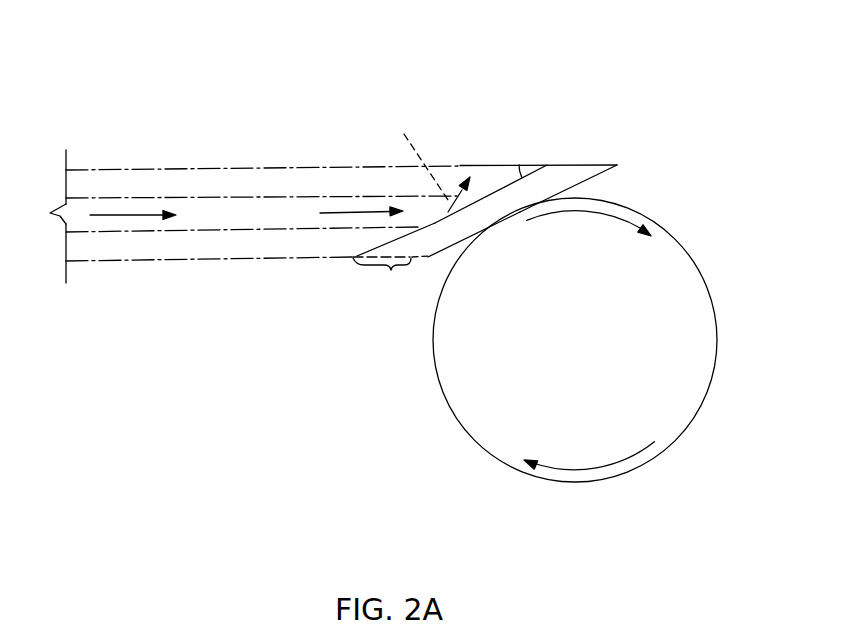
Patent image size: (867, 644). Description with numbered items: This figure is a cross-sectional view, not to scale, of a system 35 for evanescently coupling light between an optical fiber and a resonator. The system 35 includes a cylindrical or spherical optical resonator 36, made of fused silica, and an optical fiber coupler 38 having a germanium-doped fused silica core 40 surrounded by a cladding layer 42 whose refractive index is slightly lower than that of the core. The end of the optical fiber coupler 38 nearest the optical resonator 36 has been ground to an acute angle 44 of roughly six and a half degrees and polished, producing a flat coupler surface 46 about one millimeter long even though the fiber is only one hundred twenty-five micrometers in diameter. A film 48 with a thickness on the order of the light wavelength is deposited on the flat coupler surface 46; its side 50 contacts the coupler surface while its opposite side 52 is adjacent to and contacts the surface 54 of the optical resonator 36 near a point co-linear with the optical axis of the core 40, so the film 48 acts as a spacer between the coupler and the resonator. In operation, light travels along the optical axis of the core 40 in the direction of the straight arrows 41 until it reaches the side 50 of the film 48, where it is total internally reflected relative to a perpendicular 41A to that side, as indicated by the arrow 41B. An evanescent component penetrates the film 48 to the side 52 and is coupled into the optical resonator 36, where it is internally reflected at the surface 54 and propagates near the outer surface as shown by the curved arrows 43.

The system 35 is at (614, 56).
The cylindrical or spherical optical resonator 36 is at (719, 333).
The optical fiber coupler 38 is at (127, 170).
The core 40 is at (258, 210).
The straight arrows 41 is at (125, 216).
The perpendicular 41A is at (399, 138).
The arrow 41B is at (458, 195).
The cladding layer 42 is at (205, 185).
The curved arrows 43 is at (575, 468).
The acute angle 44 is at (512, 167).
The flat coupler surface 46 is at (488, 180).
The film 48 is at (580, 165).
The side of the film 50 is at (438, 236).
The side of the film 52 is at (556, 182).
The surface of the optical resonator 54 is at (515, 230).